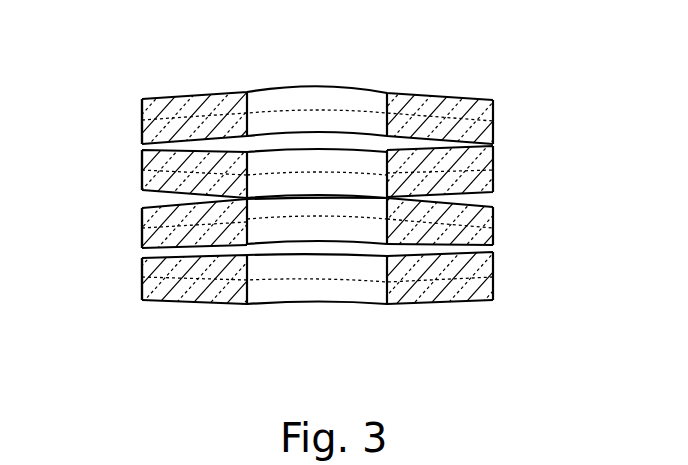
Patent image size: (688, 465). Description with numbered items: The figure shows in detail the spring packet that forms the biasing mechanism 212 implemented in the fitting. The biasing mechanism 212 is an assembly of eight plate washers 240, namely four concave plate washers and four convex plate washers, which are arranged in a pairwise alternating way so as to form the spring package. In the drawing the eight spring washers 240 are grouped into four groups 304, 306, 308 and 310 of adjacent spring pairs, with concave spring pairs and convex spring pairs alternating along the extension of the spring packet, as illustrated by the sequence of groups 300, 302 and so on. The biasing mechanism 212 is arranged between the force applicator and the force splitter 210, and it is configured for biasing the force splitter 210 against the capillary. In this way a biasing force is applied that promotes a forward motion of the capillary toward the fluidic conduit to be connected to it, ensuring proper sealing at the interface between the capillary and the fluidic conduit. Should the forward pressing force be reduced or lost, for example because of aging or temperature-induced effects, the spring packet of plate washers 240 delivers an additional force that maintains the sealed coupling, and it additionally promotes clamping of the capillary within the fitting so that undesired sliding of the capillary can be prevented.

The biasing mechanism 212 is at (344, 200).
The group of spring pairs 300 is at (344, 163).
The group of spring pairs 302 is at (344, 221).
The group of adjacent spring pairs 304 is at (356, 100).
The group of adjacent spring pairs 306 is at (288, 165).
The group of adjacent spring pairs 308 is at (297, 208).
The group of adjacent spring pairs 310 is at (346, 293).
The plate washers 240 is at (157, 180).
The force splitter 210 is at (205, 460).